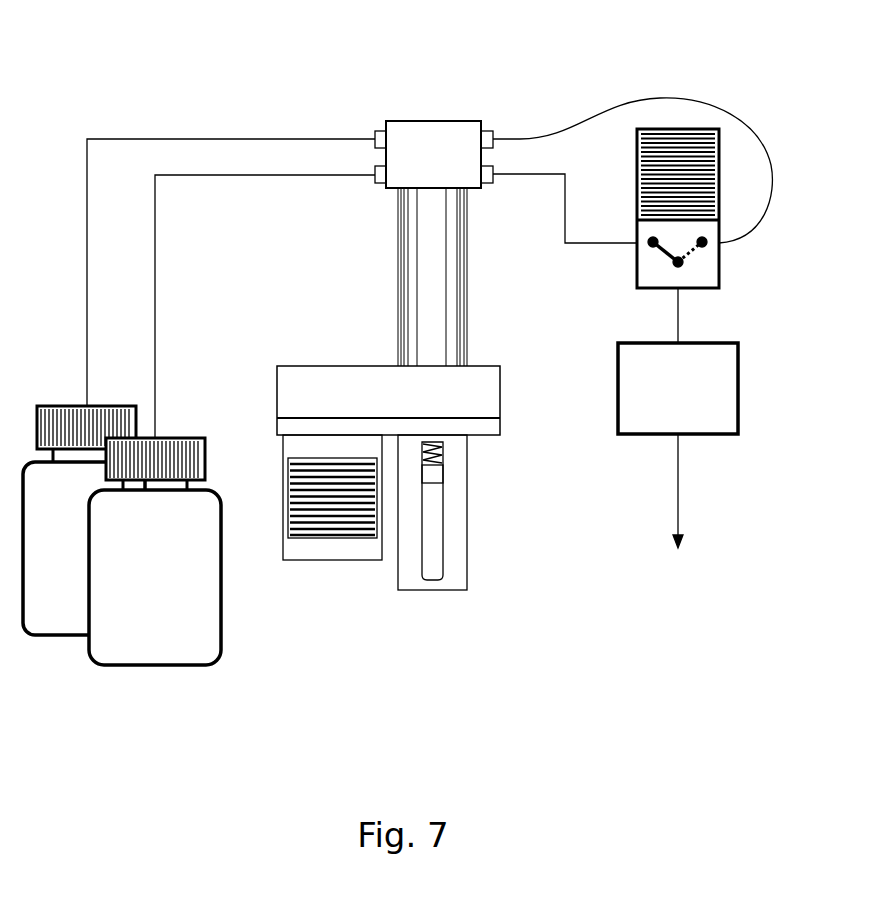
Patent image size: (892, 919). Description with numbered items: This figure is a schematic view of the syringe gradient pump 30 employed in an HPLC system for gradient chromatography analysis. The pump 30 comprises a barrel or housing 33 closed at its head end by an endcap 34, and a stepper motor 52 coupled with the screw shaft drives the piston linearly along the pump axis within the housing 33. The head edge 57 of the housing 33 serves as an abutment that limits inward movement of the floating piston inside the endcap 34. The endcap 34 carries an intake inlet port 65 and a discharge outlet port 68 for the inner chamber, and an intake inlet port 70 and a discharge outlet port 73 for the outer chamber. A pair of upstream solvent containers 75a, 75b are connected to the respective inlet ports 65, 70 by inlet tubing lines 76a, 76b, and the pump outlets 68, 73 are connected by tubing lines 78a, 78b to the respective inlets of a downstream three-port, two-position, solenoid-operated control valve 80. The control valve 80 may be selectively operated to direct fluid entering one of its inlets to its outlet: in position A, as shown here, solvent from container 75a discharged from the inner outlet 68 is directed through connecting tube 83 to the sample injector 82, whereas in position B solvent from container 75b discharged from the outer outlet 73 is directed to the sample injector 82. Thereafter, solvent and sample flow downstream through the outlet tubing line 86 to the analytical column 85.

The gradient pump 30 is at (360, 242).
The housing 33 is at (440, 316).
The endcap 34 is at (430, 135).
The stepper motor 52 is at (333, 558).
The head edge 57 is at (442, 460).
The intake inlet port 65 is at (376, 181).
The discharge outlet port 68 is at (488, 186).
The intake inlet port 70 is at (380, 133).
The discharge outlet port 73 is at (490, 135).
The container 75a is at (170, 630).
The container 75b is at (55, 595).
The inlet tubing line 76a is at (225, 175).
The inlet tubing line 76b is at (150, 139).
The tubing line 78a is at (596, 243).
The tubing line 78b is at (733, 110).
The control valve 80 is at (712, 277).
The sample injector 82 is at (708, 418).
The connecting tube 83 is at (678, 322).
The analytical column 85 is at (677, 587).
The outlet tubing line 86 is at (678, 508).